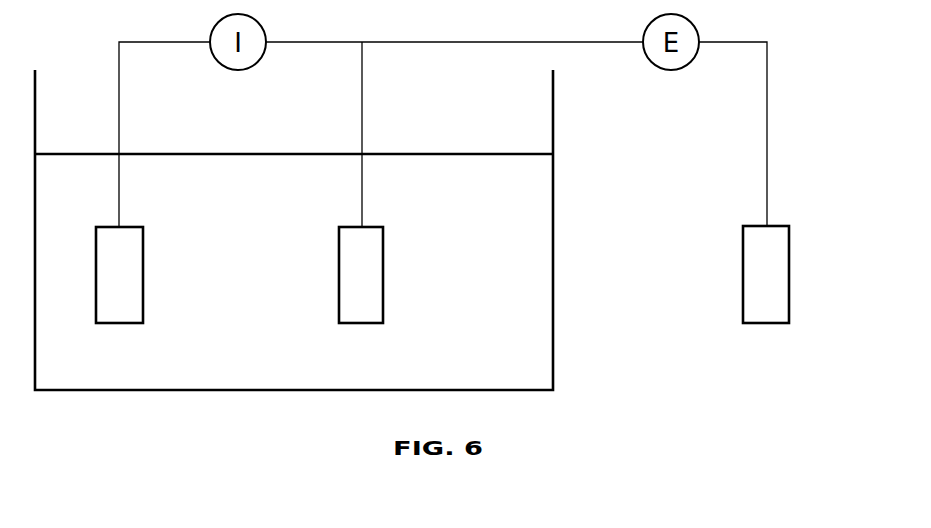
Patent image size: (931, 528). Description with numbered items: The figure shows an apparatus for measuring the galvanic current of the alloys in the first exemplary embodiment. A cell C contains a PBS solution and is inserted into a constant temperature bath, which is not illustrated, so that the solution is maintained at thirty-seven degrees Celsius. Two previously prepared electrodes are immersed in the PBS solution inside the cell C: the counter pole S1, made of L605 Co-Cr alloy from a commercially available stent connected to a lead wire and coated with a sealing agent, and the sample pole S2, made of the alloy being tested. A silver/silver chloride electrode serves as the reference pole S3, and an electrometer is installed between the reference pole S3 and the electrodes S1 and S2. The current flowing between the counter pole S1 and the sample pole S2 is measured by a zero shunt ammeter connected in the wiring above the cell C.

The cell C is at (553, 313).
The counter pole electrode S1 is at (140, 263).
The sample pole electrode S2 is at (380, 263).
The reference pole electrode S3 is at (784, 263).